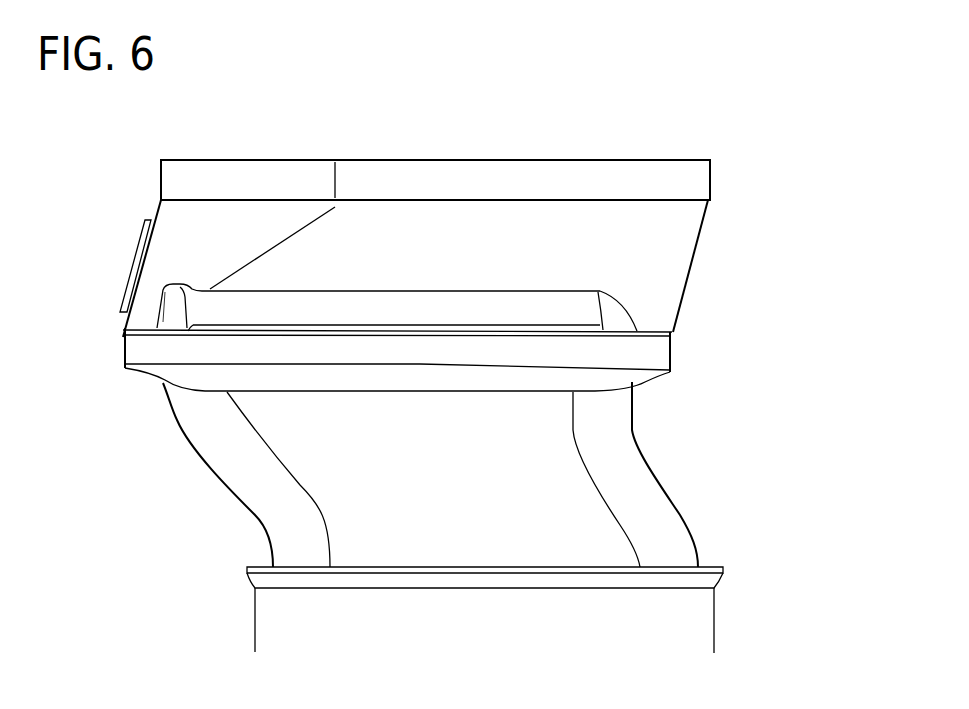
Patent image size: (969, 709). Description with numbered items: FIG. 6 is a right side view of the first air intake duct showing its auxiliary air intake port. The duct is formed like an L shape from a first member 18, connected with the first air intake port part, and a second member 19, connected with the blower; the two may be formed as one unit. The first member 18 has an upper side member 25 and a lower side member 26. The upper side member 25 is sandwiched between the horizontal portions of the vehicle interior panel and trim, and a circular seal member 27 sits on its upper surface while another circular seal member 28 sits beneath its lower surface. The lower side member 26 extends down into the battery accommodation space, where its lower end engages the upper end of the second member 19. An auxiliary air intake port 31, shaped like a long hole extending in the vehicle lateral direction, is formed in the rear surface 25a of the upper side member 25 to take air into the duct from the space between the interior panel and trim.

The first member 18 is at (427, 467).
The second member 19 is at (730, 617).
The upper side member 25 is at (426, 247).
The rear surface 25a is at (155, 210).
The lower side member 26 is at (645, 470).
The circular seal member 27 is at (625, 175).
The circular seal member 28 is at (655, 355).
The auxiliary air intake port 31 is at (118, 265).